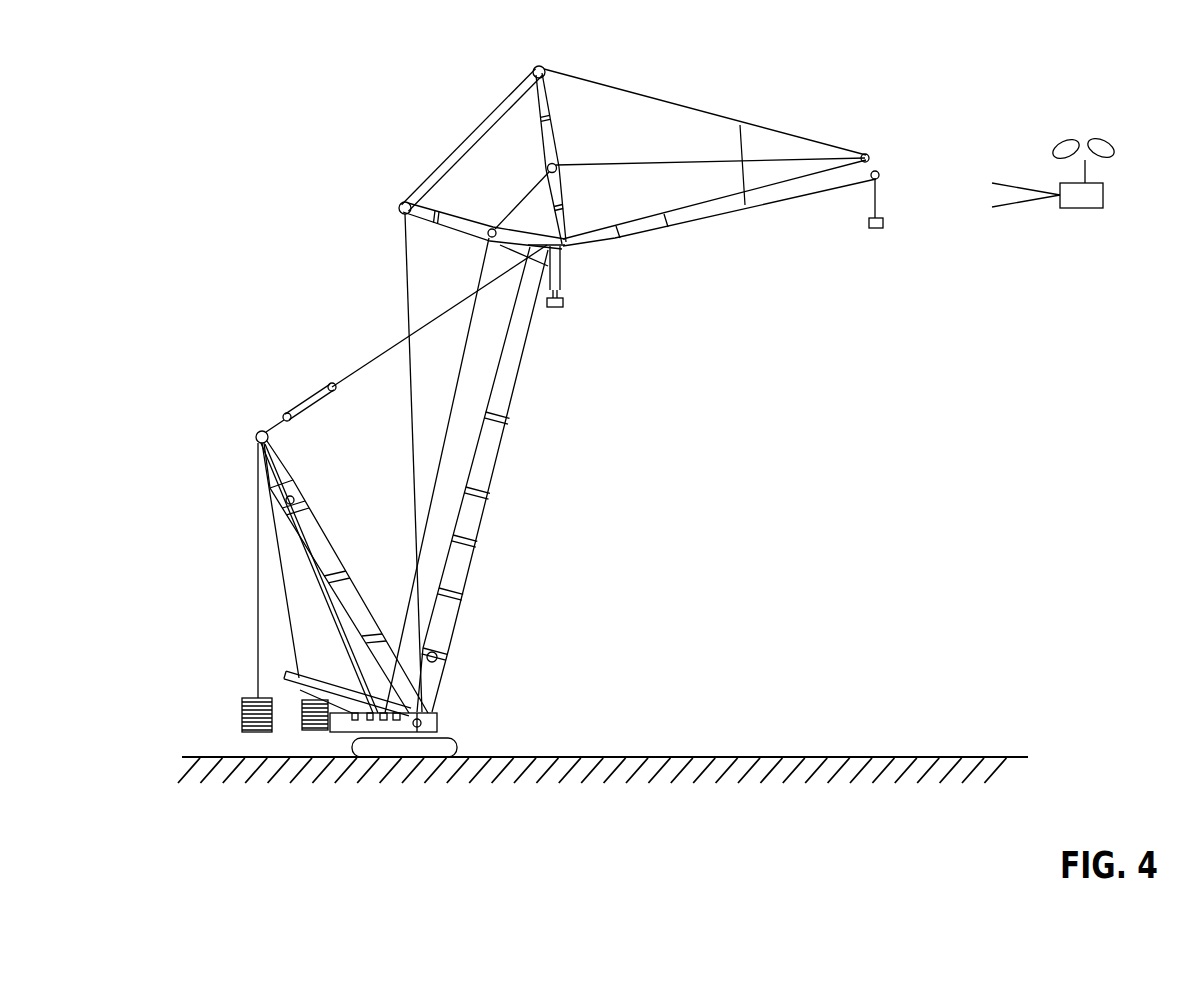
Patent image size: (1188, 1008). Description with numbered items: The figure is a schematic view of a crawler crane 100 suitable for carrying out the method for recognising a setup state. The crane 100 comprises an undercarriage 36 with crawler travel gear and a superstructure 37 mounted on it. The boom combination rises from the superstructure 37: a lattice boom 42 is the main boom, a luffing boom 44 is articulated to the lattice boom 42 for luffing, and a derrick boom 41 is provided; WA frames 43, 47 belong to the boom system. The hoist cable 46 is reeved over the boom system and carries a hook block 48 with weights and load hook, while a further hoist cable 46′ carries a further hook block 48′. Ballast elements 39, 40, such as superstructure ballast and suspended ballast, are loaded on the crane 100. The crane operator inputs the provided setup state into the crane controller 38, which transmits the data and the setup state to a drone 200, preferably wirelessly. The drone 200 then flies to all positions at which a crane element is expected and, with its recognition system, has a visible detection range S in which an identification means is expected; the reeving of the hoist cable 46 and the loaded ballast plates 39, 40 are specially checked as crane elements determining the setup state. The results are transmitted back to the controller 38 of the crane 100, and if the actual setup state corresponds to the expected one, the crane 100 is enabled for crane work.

The undercarriage 36 is at (460, 747).
The superstructure 37 is at (460, 722).
The crane controller 38 is at (418, 738).
The ballast element 39 is at (298, 730).
The ballast element 40 is at (243, 718).
The derrick boom 41 is at (326, 537).
The lattice boom 42 is at (497, 455).
The WA frame 43 is at (463, 223).
The luffing boom 44 is at (705, 212).
The hoist cable 46 is at (640, 160).
The hoist cable 46′ is at (553, 274).
The WA frame 47 is at (556, 123).
The hook block 48 is at (886, 228).
The hook block 48′ is at (563, 305).
The crane 100 is at (404, 788).
The drone 200 is at (1095, 203).
The detection range S is at (1028, 240).